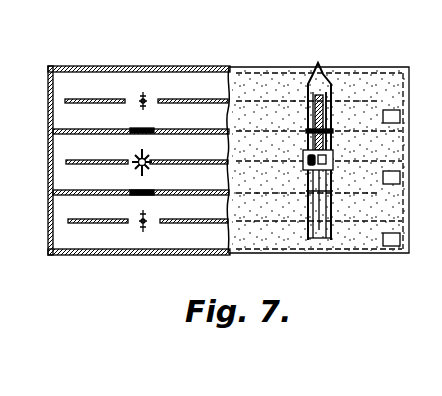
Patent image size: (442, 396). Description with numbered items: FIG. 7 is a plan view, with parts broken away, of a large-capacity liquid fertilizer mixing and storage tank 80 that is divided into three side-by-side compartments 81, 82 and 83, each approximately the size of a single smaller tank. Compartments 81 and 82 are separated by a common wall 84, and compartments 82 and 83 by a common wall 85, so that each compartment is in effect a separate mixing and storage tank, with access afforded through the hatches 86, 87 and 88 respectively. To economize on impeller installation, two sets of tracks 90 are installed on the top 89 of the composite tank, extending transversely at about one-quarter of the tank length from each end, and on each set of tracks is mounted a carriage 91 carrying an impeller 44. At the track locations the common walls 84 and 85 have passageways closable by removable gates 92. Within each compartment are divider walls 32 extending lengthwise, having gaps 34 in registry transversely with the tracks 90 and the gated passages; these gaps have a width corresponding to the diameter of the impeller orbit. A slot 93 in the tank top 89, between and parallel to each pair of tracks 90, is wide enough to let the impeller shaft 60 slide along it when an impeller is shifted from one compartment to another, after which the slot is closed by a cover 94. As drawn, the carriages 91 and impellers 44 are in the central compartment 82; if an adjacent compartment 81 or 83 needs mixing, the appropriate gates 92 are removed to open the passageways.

The tank 80 is at (192, 64).
The compartment 81 is at (48, 100).
The compartment 82 is at (48, 162).
The compartment 83 is at (48, 220).
The common wall 84 is at (97, 129).
The common wall 85 is at (98, 190).
The hatch 86 is at (392, 110).
The hatch 87 is at (383, 178).
The hatch 88 is at (392, 247).
The top 89 is at (254, 74).
The tracks 90 is at (320, 66).
The carriage 91 is at (330, 162).
The gates 92 is at (152, 128).
The slot 93 is at (320, 242).
The cover 94 is at (332, 100).
The divider walls 32 is at (95, 99).
The gaps 34 is at (146, 100).
The impeller 44 is at (146, 159).
The impeller shaft 60 is at (138, 167).